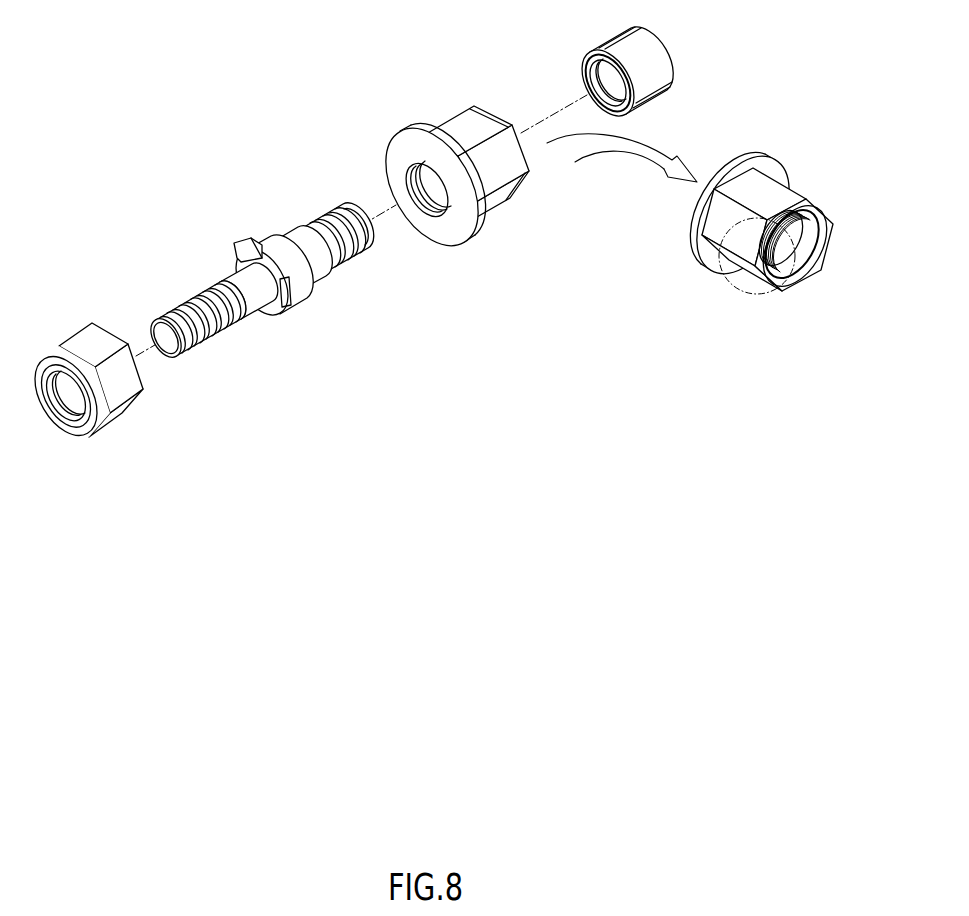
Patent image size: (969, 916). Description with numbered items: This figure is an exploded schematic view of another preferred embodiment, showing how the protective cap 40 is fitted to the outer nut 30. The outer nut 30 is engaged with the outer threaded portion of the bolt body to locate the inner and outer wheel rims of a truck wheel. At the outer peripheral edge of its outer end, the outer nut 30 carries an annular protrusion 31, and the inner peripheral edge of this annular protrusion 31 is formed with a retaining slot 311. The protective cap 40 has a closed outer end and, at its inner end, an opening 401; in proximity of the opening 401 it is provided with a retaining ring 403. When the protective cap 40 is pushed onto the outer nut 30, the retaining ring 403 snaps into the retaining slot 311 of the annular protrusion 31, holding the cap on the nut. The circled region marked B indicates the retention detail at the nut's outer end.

The outer nut 30 is at (457, 119).
The protective cap 40 is at (603, 62).
The opening 401 is at (588, 78).
The retaining ring 403 is at (582, 56).
The annular protrusion 31 is at (759, 239).
The retaining slot 311 is at (784, 194).
The section reference circle B is at (752, 294).